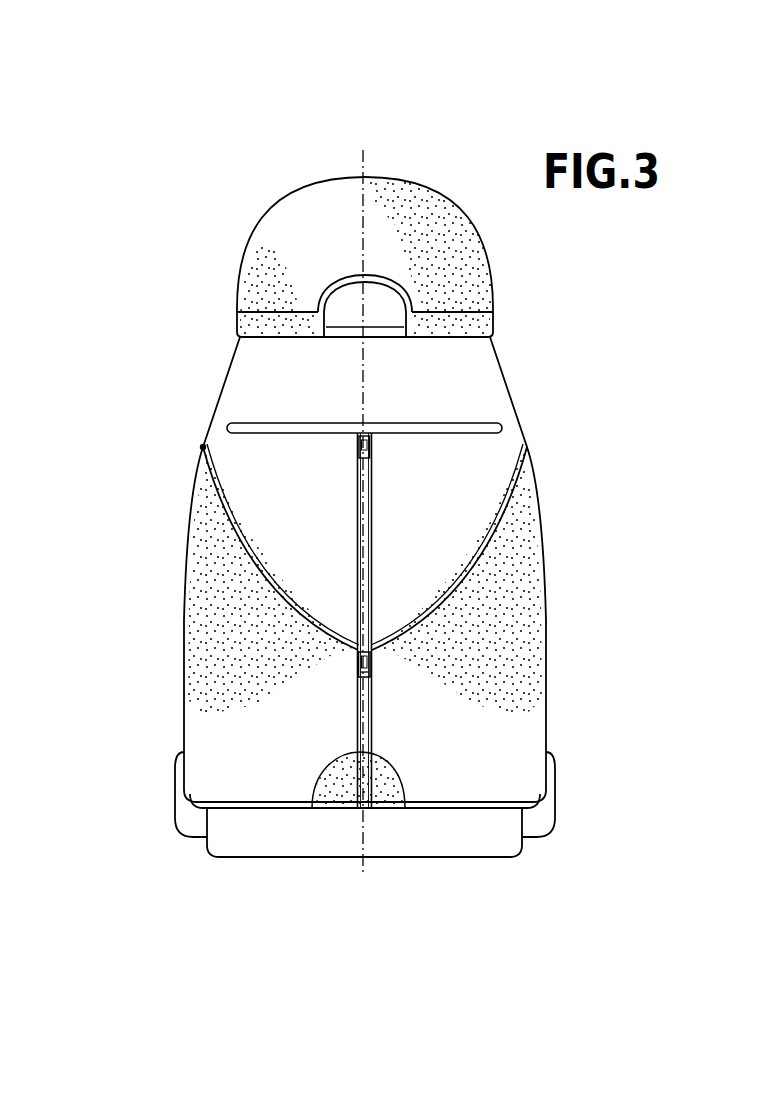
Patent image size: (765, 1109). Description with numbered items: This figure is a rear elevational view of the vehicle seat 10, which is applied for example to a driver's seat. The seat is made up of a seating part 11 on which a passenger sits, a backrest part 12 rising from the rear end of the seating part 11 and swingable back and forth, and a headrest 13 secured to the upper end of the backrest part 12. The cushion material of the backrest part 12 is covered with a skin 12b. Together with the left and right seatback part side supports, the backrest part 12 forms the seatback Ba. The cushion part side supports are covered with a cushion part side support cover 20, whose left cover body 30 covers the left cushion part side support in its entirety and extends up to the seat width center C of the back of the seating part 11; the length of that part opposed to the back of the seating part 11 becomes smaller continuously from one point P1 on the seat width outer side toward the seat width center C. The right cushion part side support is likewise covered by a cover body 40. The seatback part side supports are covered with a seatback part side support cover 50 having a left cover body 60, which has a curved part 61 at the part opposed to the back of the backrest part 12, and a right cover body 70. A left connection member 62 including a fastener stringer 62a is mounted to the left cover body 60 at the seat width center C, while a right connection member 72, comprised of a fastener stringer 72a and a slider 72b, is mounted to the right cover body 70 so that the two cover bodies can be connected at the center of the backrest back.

The vehicle seat 10 is at (125, 150).
The seating part 11 is at (272, 838).
The backrest part 12 is at (463, 392).
The skin 12b is at (473, 464).
The headrest 13 is at (355, 301).
The cushion part side support cover 20 is at (363, 794).
The left cover body 30 is at (173, 798).
The right seat cushion side support 40 is at (557, 798).
The seatback part side support cover 50 is at (363, 530).
The left cover body 60 is at (183, 603).
The curved part 61 is at (227, 495).
The connection member 62 is at (348, 848).
The fastener stringer 62a is at (312, 808).
The right cover body 70 is at (547, 603).
The right connection member 72 is at (500, 910).
The fastener stringer 72a is at (405, 808).
The slider 72b is at (370, 672).
The seat width center C is at (367, 165).
The one point P1 is at (203, 447).
The seatback Ba is at (428, 516).